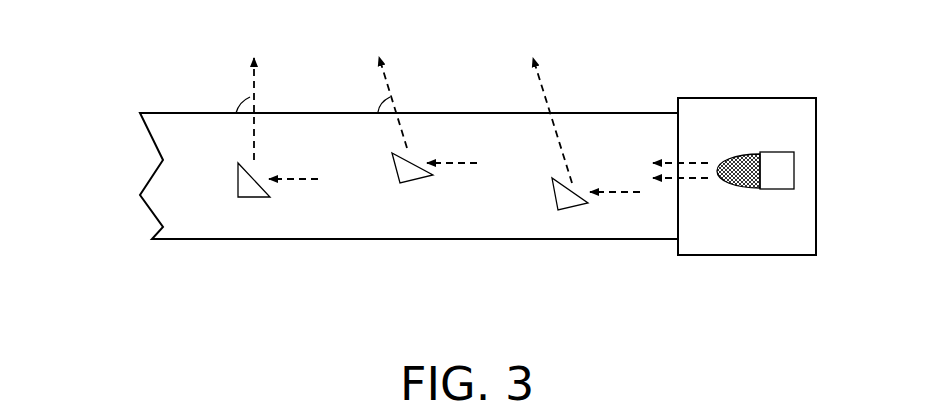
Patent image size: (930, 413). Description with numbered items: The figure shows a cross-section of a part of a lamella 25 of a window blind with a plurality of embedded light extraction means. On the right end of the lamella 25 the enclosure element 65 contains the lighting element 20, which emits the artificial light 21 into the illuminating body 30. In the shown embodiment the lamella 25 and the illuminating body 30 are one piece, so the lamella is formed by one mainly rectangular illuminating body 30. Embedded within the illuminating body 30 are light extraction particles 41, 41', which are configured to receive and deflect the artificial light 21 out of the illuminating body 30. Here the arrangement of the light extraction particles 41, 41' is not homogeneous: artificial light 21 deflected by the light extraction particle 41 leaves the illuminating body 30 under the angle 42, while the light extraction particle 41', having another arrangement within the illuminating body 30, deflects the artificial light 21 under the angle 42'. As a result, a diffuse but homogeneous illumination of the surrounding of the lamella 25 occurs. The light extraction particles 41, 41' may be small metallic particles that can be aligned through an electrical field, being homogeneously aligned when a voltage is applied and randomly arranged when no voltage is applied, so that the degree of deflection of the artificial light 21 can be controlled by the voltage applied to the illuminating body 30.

The lamella 25 is at (121, 58).
The illuminating body 30 is at (182, 217).
The enclosure element 65 is at (747, 237).
The lighting element 20 is at (780, 168).
The artificial light 21 is at (253, 78).
The light extraction particle 41 is at (253, 227).
The light extraction particle 41' is at (421, 230).
The angle 42 is at (215, 99).
The angle 42' is at (354, 97).